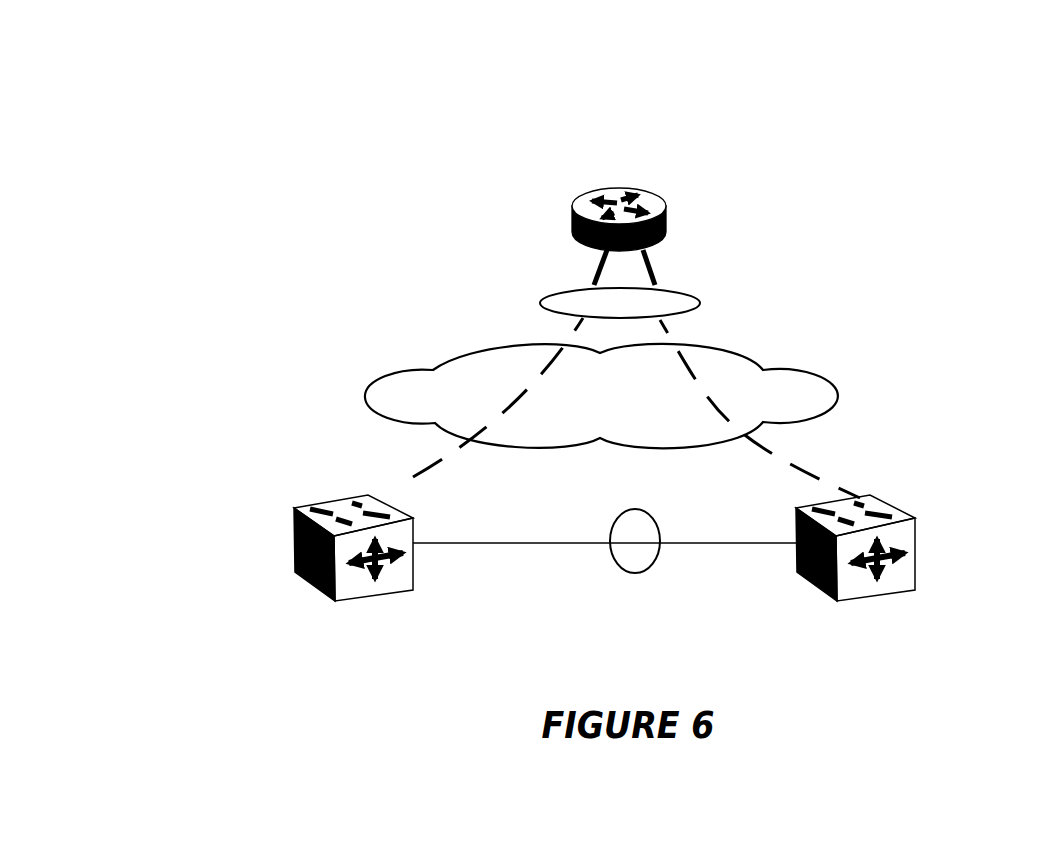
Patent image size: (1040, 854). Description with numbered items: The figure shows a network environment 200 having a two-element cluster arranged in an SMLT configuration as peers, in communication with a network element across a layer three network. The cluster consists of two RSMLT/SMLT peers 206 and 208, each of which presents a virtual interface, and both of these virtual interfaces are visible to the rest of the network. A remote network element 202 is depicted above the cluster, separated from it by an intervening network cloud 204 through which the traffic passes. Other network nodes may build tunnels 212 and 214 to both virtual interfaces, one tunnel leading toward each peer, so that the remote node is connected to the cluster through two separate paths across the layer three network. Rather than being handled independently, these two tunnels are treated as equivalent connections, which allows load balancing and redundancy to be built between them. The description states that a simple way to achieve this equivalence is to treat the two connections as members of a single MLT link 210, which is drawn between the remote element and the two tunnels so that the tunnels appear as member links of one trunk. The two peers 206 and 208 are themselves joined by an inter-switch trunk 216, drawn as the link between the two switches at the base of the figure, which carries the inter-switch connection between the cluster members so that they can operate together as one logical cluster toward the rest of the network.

The environment 200 is at (476, 101).
The router 202 is at (572, 208).
The network cloud 204 is at (423, 370).
The RSMLT/SMLT peer 206 is at (295, 511).
The RSMLT/SMLT peer 208 is at (893, 512).
The MLT link 210 is at (543, 299).
The tunnel 212 is at (397, 485).
The tunnel 214 is at (790, 463).
The inter-switch trunk (IST) 216 is at (612, 542).